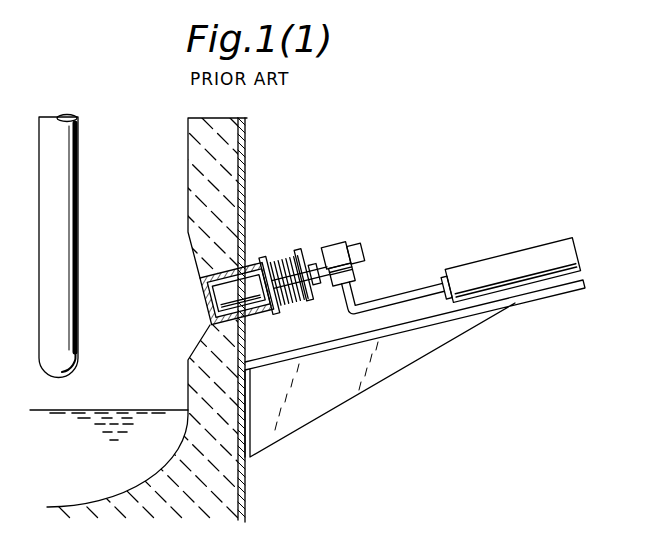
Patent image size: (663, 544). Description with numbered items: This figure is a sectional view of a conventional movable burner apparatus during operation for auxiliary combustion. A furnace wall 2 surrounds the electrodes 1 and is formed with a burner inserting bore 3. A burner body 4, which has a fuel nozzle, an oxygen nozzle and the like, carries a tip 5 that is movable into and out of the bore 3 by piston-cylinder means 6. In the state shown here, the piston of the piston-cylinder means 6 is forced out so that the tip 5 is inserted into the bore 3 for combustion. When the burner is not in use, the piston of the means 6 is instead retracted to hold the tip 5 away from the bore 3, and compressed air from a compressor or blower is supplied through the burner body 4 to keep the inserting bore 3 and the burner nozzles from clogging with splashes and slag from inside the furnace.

The electrodes 1 is at (62, 218).
The furnace wall 2 is at (250, 154).
The burner inserting bore 3 is at (207, 308).
The burner body 4 is at (313, 252).
The tip 5 is at (223, 292).
The piston-cylinder means 6 is at (497, 270).